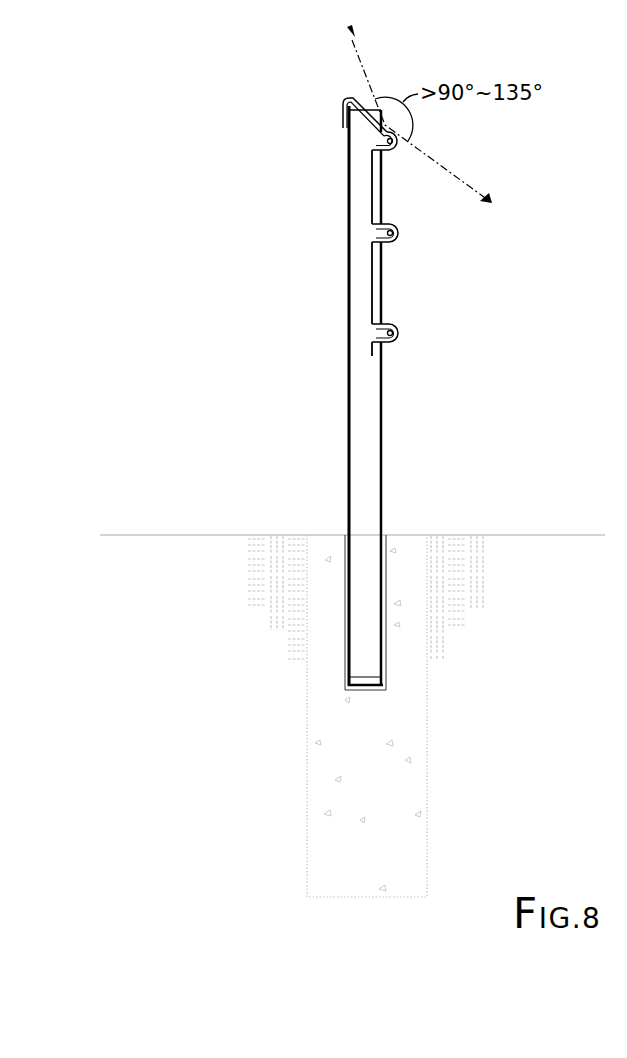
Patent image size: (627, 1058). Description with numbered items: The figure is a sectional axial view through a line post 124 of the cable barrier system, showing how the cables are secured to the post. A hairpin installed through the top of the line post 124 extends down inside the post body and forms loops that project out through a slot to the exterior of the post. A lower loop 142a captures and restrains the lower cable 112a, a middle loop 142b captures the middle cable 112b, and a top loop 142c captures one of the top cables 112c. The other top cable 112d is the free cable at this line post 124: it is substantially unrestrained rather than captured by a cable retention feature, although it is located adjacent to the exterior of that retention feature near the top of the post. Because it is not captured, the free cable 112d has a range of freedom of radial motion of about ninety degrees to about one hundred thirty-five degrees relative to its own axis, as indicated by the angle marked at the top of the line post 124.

The line post 124 is at (348, 193).
The lower cable 112a is at (398, 336).
The middle cable 112b is at (398, 236).
The top cable 112c is at (380, 143).
The top cable (free cable) 112d is at (393, 127).
The lower loop 142a is at (388, 346).
The middle loop 142b is at (388, 246).
The top loop 142c is at (388, 152).